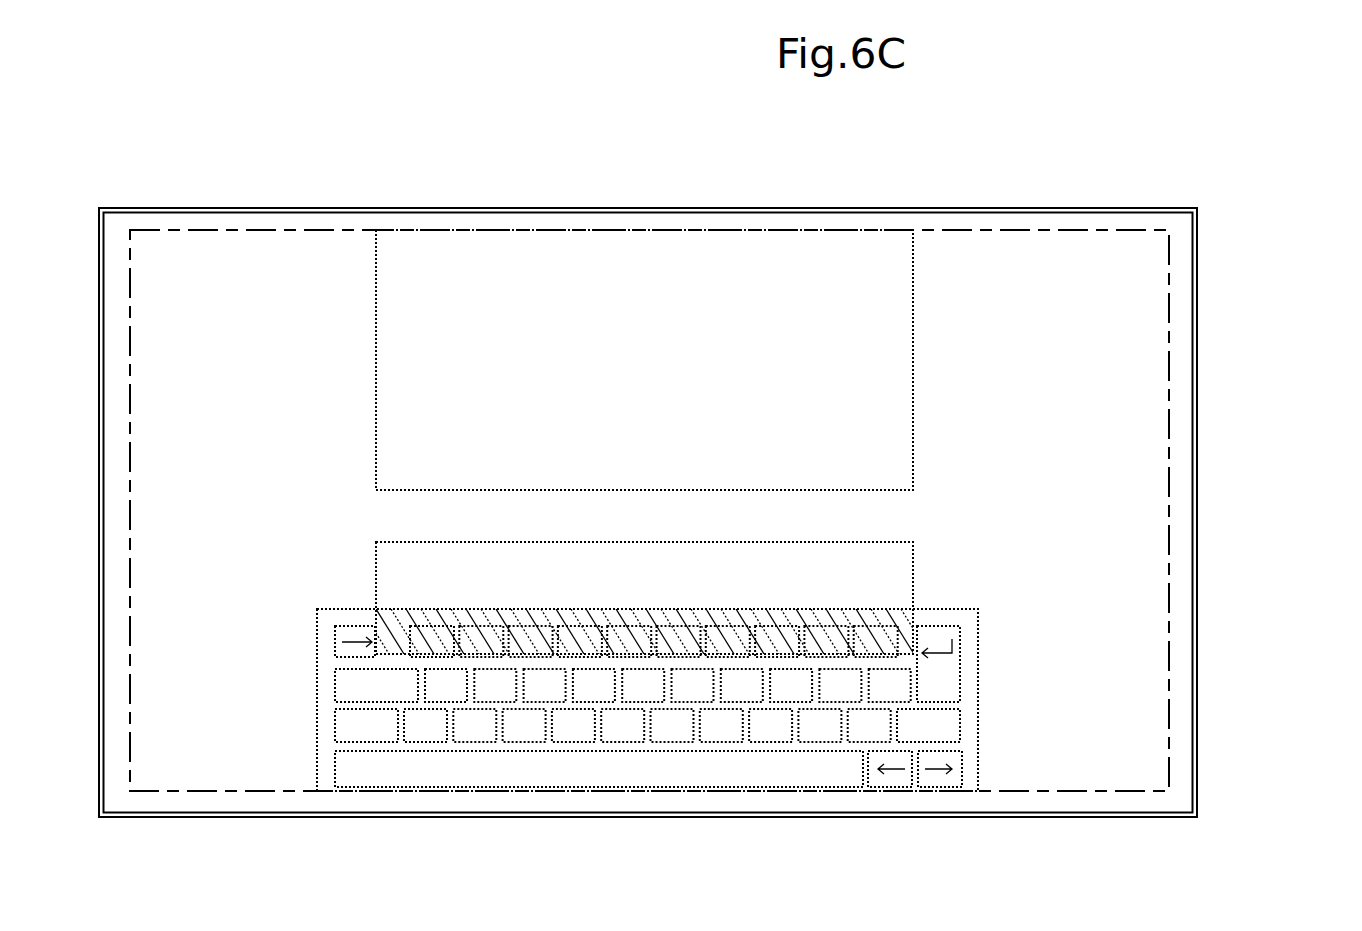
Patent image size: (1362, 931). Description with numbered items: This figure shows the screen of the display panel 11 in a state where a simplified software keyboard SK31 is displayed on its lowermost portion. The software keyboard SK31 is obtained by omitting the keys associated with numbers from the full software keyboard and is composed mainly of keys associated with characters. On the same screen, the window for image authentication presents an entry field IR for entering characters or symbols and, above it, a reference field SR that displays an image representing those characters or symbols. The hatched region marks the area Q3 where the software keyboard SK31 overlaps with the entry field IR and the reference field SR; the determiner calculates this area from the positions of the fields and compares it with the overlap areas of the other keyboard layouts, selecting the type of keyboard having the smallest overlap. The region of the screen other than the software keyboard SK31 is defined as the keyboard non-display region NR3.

The display panel 11 is at (270, 210).
The keyboard non-display region NR3 is at (1170, 393).
The reference field SR is at (885, 366).
The entry field IR is at (877, 543).
The area Q3 is at (470, 608).
The software keyboard SK31 is at (812, 787).